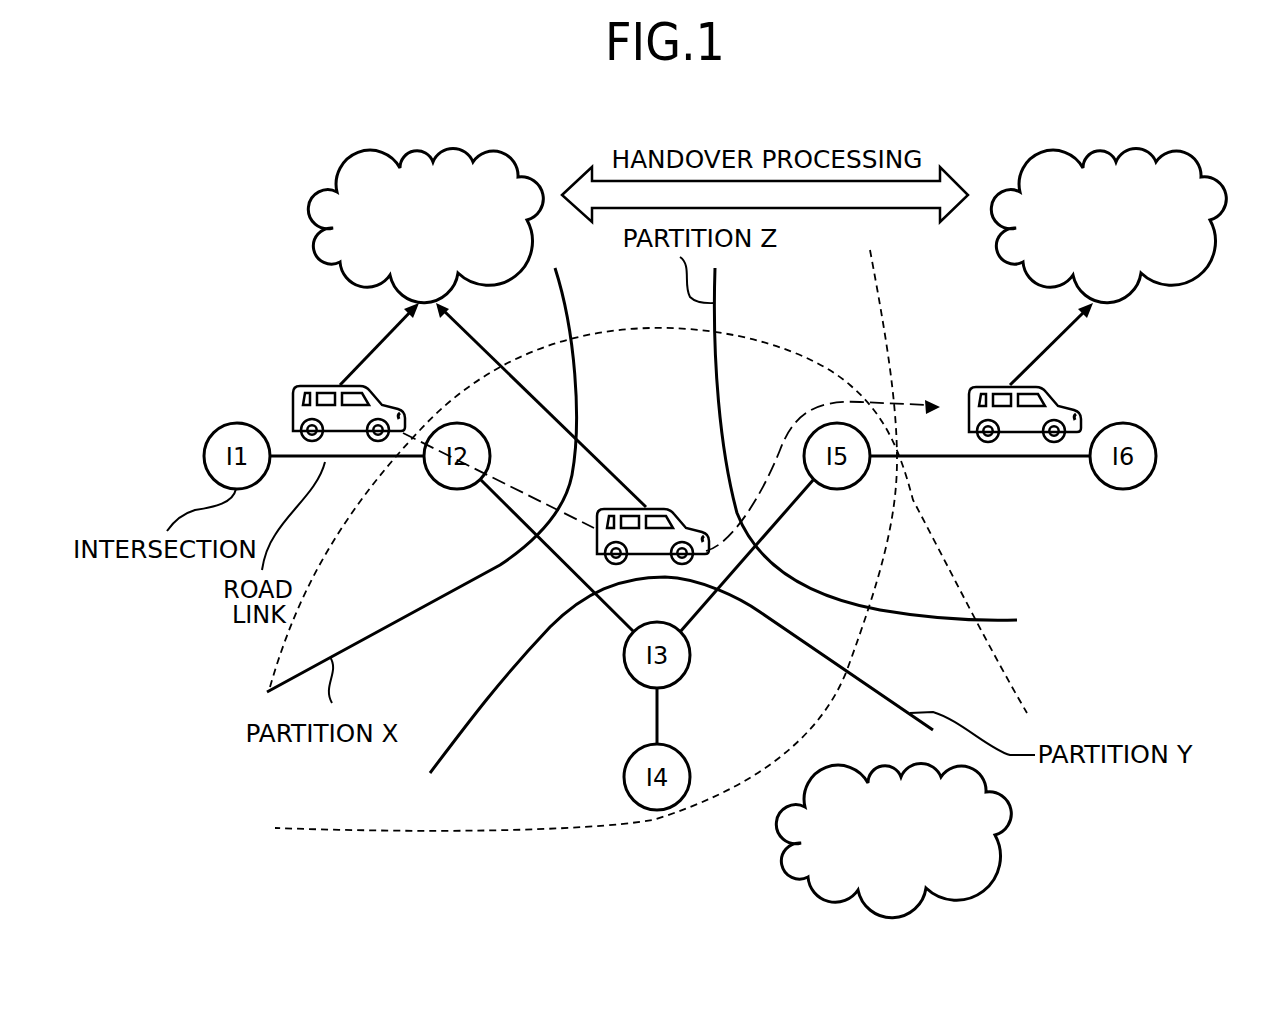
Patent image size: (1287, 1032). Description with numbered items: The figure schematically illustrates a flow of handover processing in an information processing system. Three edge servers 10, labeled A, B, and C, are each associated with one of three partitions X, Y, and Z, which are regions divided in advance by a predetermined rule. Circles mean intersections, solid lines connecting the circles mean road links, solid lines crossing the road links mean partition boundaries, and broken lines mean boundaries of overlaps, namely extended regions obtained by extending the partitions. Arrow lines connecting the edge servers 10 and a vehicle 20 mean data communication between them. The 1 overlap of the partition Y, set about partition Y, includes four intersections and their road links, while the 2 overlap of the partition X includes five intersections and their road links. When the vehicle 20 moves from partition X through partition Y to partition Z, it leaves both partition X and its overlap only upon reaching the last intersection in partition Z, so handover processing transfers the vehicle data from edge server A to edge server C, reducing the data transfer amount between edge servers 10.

The edge server 10 is at (417, 148).
The vehicle 20 is at (318, 384).
The 1 overlap of the partition Y 1 is at (1003, 673).
The 2 overlap of the partition X 2 is at (340, 830).